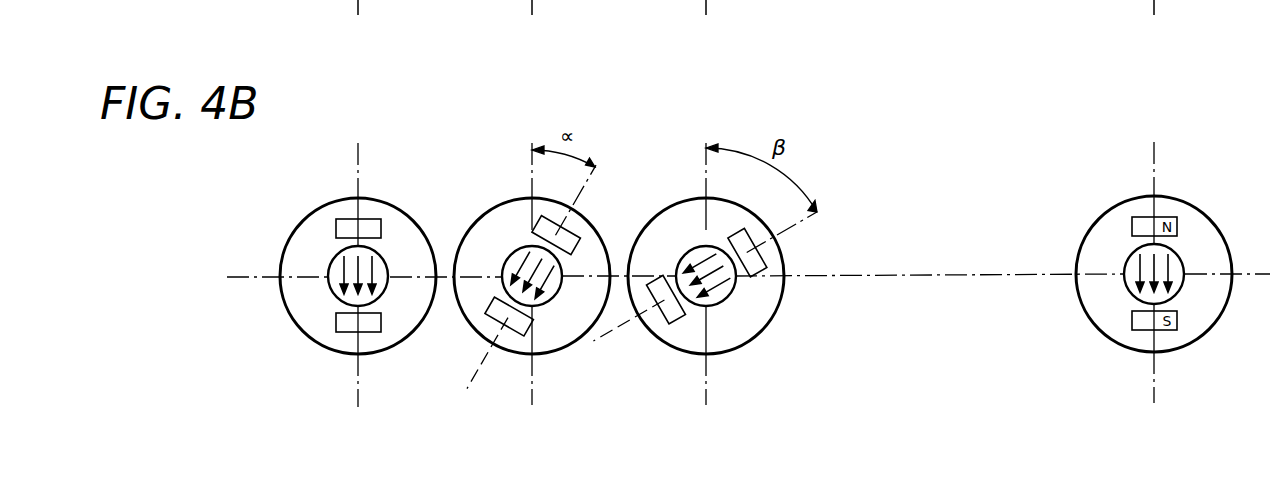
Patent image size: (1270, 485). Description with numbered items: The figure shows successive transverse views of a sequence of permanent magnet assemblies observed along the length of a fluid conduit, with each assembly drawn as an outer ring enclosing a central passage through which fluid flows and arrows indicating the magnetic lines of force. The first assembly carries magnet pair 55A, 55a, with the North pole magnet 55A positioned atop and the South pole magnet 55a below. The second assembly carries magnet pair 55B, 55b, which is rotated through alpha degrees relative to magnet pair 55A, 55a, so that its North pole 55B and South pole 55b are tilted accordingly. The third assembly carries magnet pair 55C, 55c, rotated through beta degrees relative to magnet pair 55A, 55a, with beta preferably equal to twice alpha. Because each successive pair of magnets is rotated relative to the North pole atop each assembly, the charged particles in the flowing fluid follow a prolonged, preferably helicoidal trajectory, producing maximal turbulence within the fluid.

The north pole magnet of magnet pair A 55A is at (304, 212).
The south pole magnet of magnet pair A 55a is at (304, 338).
The north pole magnet of magnet pair B 55B is at (518, 199).
The south pole magnet of magnet pair B 55b is at (457, 343).
The north pole magnet of magnet pair C 55C is at (809, 244).
The south pole magnet of magnet pair C 55c is at (633, 337).